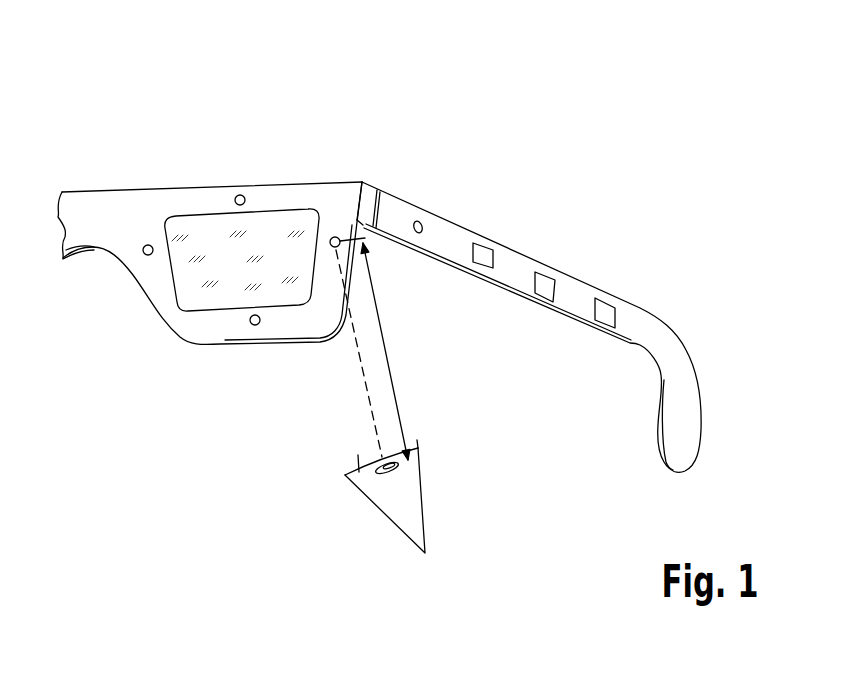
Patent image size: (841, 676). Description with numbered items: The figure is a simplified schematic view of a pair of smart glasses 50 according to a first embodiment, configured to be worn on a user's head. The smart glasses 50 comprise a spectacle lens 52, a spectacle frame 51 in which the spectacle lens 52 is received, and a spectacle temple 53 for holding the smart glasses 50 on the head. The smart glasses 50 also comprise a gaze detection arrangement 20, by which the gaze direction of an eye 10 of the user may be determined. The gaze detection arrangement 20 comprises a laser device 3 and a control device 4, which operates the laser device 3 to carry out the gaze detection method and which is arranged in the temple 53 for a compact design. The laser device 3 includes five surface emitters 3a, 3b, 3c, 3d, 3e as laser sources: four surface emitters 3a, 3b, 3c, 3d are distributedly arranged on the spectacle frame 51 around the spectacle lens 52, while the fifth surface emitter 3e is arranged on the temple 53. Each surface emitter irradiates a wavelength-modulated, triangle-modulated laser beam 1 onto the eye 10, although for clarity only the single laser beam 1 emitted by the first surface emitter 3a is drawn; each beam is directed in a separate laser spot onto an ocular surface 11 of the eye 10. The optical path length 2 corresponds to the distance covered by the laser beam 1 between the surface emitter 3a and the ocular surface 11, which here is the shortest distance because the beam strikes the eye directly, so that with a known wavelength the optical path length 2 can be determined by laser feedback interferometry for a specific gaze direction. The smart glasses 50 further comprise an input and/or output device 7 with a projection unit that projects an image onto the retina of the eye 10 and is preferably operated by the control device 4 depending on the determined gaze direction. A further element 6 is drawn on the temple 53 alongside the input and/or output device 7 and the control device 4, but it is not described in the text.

The smart glasses 50 is at (597, 88).
The laser device 3 is at (110, 93).
The gaze detection arrangement 20 is at (407, 158).
The spectacle frame 51 is at (95, 215).
The spectacle lens 52 is at (187, 289).
The first surface emitter 3a is at (337, 236).
The surface emitter 3b is at (254, 326).
The surface emitter 3c is at (242, 194).
The surface emitter 3d is at (147, 244).
The fifth surface emitter 3e is at (423, 223).
The control device 4 is at (606, 312).
The sensor element 6 is at (548, 287).
The input and/or output device 7 is at (482, 253).
The spectacle temple 53 is at (655, 338).
The optical path length 2 is at (387, 350).
The laser beam 1 is at (368, 402).
The eye 10 is at (382, 520).
The ocular surface 11 is at (355, 473).